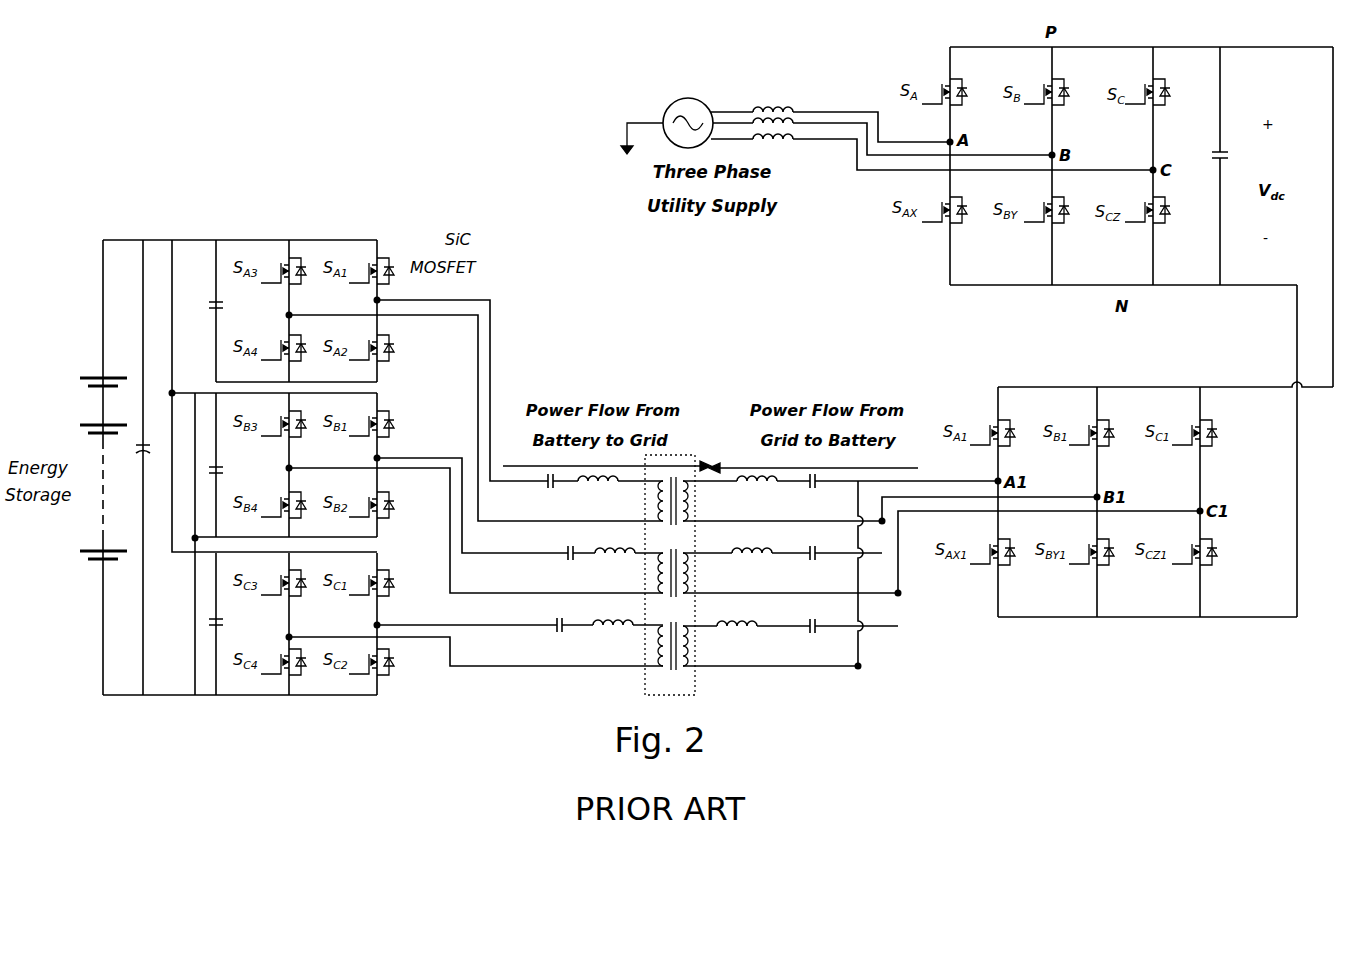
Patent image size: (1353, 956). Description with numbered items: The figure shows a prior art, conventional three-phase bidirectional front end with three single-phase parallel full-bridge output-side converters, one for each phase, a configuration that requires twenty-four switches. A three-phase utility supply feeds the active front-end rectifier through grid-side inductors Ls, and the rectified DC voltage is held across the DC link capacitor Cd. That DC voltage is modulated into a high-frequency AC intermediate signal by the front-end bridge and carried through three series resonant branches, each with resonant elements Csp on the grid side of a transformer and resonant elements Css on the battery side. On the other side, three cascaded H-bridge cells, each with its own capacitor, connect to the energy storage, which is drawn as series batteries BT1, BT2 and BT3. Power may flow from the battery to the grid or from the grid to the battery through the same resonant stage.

The battery 1 BT1 is at (78, 382).
The battery 2 BT2 is at (78, 429).
The battery 3 BT3 is at (78, 555).
The primary-side series resonant capacitors and inductors Css is at (476, 483).
The secondary-side series resonant capacitors and inductors Csp is at (941, 570).
The DC link capacitor Cd is at (1233, 166).
The grid-side inductors Ls is at (932, 126).